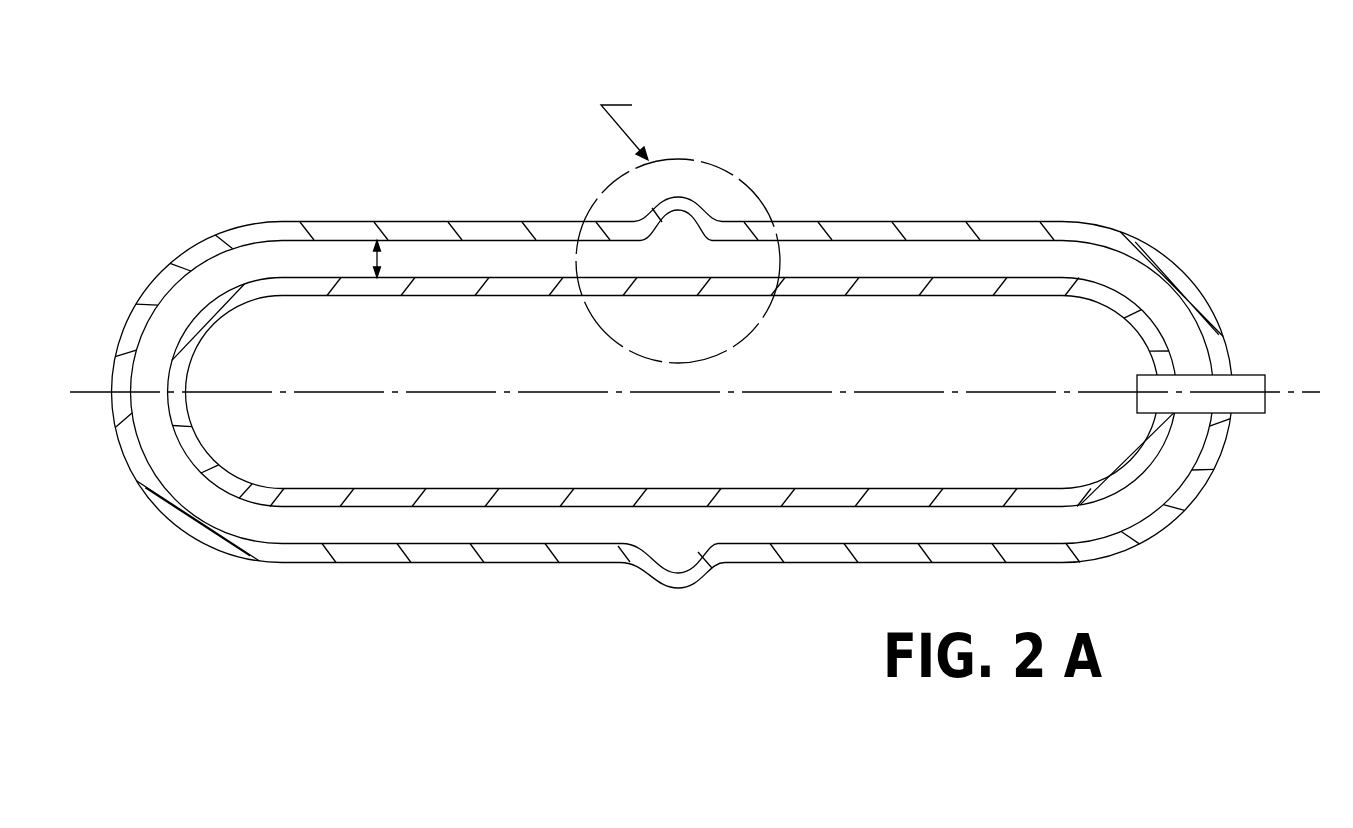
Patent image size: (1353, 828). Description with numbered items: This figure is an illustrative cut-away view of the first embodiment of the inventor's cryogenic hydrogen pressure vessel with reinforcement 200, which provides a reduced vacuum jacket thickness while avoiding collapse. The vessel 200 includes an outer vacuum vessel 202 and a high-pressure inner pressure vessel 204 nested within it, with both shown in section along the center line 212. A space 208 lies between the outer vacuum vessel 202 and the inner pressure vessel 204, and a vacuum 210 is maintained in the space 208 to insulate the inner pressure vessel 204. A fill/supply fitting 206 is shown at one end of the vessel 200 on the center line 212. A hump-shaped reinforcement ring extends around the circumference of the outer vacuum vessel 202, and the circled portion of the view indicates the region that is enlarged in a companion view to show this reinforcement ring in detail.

The cryogenic hydrogen pressure vessel with reinforcement 200 is at (695, 336).
The outer vacuum vessel 202 is at (875, 222).
The inner pressure vessel 204 is at (988, 278).
The fill/supply fitting 206 is at (1247, 374).
The space between outer vacuum vessel and inner pressure vessel 208 is at (376, 257).
The vacuum in space 210 is at (485, 257).
The center line 212 is at (885, 392).